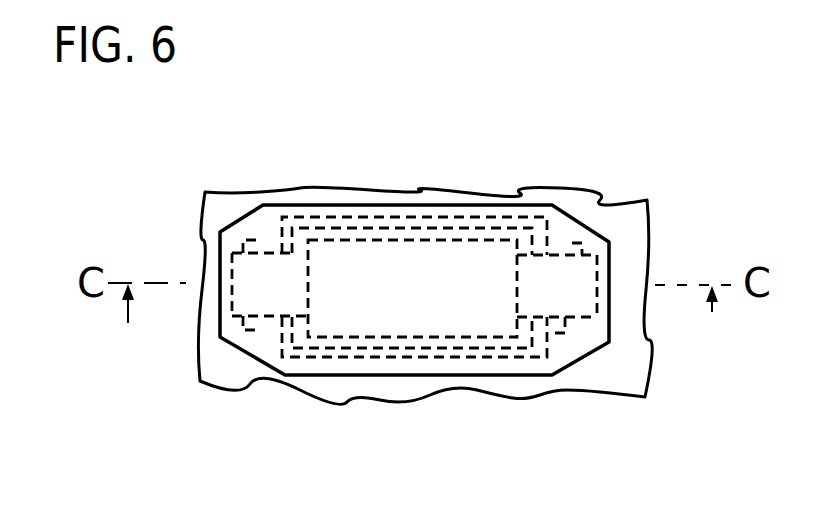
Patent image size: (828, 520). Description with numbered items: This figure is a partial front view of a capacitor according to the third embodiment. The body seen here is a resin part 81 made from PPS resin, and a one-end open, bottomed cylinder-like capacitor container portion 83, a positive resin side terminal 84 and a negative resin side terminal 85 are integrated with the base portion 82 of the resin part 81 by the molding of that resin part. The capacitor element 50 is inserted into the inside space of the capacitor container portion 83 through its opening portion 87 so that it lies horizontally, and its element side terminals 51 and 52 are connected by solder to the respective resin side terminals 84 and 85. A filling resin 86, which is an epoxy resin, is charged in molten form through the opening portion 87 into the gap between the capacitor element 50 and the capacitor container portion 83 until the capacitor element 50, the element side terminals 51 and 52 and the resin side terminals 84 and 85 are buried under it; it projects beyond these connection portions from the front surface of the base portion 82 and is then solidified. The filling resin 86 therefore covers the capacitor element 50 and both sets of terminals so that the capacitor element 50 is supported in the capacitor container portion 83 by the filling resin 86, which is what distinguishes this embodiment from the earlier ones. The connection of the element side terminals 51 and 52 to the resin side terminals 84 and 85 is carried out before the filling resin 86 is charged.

The capacitor element 50 is at (393, 238).
The element side terminal 51 is at (600, 262).
The element side terminal 52 is at (220, 250).
The resin part 81 is at (656, 210).
The base portion 82 is at (627, 374).
The capacitor container portion 83 is at (280, 348).
The positive resin side terminal 84 is at (558, 242).
The negative resin side terminal 85 is at (247, 224).
The filling resin 86 is at (320, 222).
The opening portion 87 is at (323, 348).